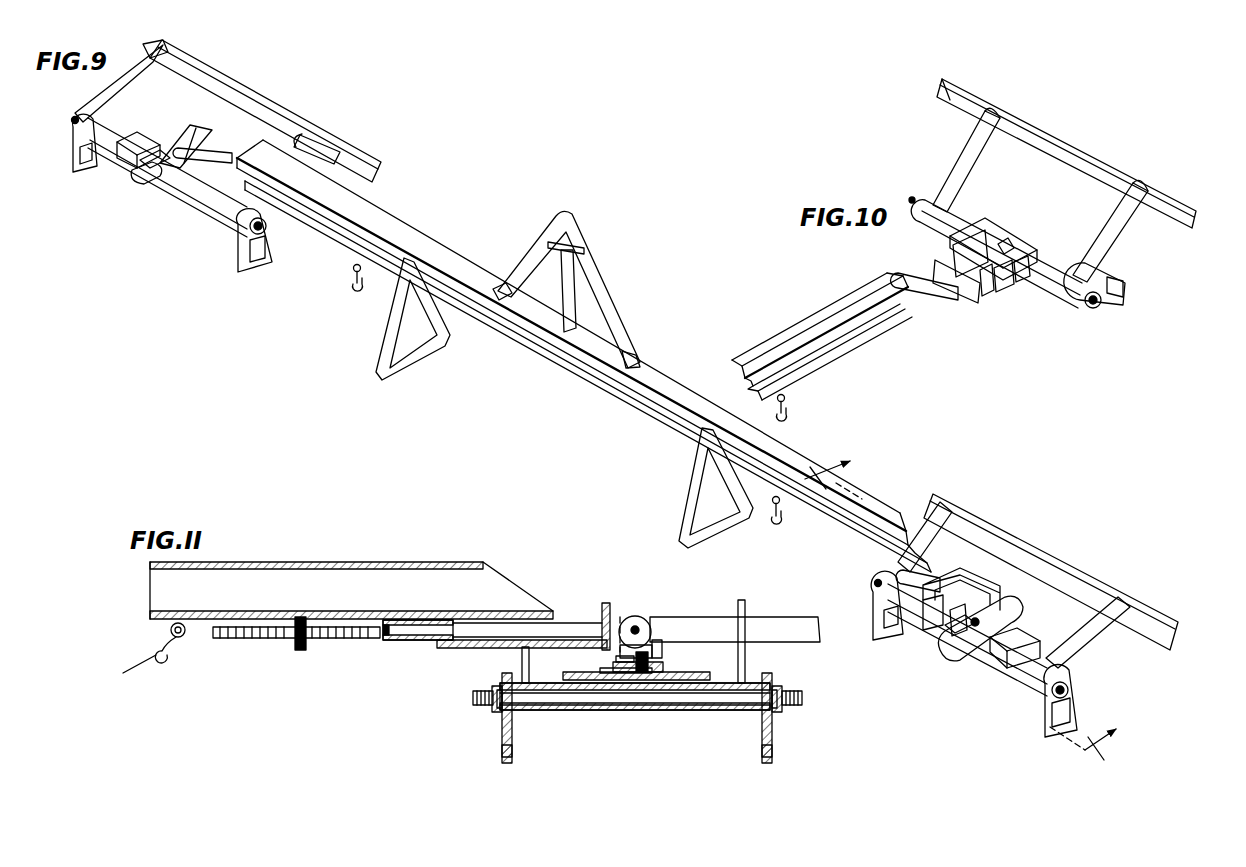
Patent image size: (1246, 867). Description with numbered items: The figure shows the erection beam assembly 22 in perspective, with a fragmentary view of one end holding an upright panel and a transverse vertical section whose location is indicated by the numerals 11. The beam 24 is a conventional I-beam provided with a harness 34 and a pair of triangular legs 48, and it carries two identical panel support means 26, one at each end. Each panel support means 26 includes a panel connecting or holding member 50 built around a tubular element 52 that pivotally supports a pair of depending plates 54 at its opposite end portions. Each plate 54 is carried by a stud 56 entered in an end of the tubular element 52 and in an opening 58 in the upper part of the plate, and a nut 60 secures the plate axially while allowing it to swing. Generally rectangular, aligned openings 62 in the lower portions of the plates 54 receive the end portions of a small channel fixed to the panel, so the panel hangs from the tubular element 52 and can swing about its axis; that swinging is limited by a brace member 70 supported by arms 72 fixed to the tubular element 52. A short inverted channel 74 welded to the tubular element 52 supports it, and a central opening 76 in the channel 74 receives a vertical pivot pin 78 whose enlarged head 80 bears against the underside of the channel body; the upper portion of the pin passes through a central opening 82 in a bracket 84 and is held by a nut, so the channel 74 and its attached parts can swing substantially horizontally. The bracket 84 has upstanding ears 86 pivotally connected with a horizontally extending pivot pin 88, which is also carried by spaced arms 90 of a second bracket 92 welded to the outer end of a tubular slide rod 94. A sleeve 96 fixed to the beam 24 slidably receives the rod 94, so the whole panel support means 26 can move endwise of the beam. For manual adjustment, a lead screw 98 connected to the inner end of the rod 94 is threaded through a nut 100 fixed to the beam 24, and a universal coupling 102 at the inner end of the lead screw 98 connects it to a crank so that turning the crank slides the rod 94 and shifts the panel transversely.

In FIG. 9, the section location indicator 11 is at (971, 602).
In FIG. 9, the erection beam assembly 22 is at (632, 302).
In FIG. 9, the beam 24 is at (440, 245).
In FIG. 10, the beam 24 is at (804, 318).
In FIG. 11, the beam 24 is at (293, 564).
In FIG. 9, the panel support means 26 is at (118, 215).
In FIG. 9, the harness 34 is at (565, 218).
In FIG. 9, the triangular legs 48 is at (417, 352).
In FIG. 9, the panel connecting or holding member 50 is at (255, 274).
In FIG. 9, the tubular element 52 is at (214, 205).
In FIG. 10, the tubular element 52 is at (1051, 260).
In FIG. 11, the tubular element 52 is at (585, 712).
In FIG. 9, the depending plates 54 is at (85, 170).
In FIG. 10, the depending plates 54 is at (931, 180).
In FIG. 11, the depending plates 54 is at (762, 752).
In FIG. 9, the stud 56 is at (74, 120).
In FIG. 10, the stud 56 is at (909, 200).
In FIG. 11, the stud 56 is at (516, 712).
In FIG. 11, the openings 58 is at (498, 689).
In FIG. 9, the nuts 60 is at (1070, 682).
In FIG. 10, the nuts 60 is at (1088, 310).
In FIG. 11, the nuts 60 is at (496, 713).
In FIG. 9, the openings 62 is at (876, 617).
In FIG. 10, the openings 62 is at (1126, 283).
In FIG. 11, the openings 62 is at (500, 753).
In FIG. 9, the brace member 70 is at (267, 107).
In FIG. 10, the brace member 70 is at (1076, 150).
In FIG. 11, the brace member 70 is at (760, 622).
In FIG. 9, the arms 72 is at (130, 88).
In FIG. 10, the arms 72 is at (966, 148).
In FIG. 11, the arms 72 is at (738, 605).
In FIG. 9, the inverted channel 74 is at (140, 136).
In FIG. 10, the inverted channel 74 is at (976, 232).
In FIG. 11, the inverted channel 74 is at (700, 673).
In FIG. 11, the central opening 76 is at (660, 668).
In FIG. 9, the vertical pivot pin 78 is at (960, 636).
In FIG. 10, the vertical pivot pin 78 is at (1004, 244).
In FIG. 11, the vertical pivot pin 78 is at (648, 644).
In FIG. 11, the enlarged head 80 is at (643, 682).
In FIG. 11, the central opening 82 is at (616, 660).
In FIG. 9, the bracket 84 is at (150, 180).
In FIG. 10, the bracket 84 is at (1024, 284).
In FIG. 11, the bracket 84 is at (618, 682).
In FIG. 9, the upstanding arms or ears 86 is at (134, 174).
In FIG. 10, the upstanding arms or ears 86 is at (1006, 294).
In FIG. 11, the upstanding arms or ears 86 is at (660, 642).
In FIG. 9, the horizontally extending pivot pin 88 is at (990, 592).
In FIG. 10, the horizontally extending pivot pin 88 is at (985, 296).
In FIG. 11, the horizontally extending pivot pin 88 is at (638, 626).
In FIG. 9, the spaced arms 90 is at (975, 575).
In FIG. 10, the spaced arms 90 is at (950, 256).
In FIG. 11, the spaced arms 90 is at (622, 615).
In FIG. 9, the second bracket 92 is at (217, 135).
In FIG. 10, the second bracket 92 is at (924, 276).
In FIG. 11, the second bracket 92 is at (603, 606).
In FIG. 9, the tubular slide rod 94 is at (215, 152).
In FIG. 10, the tubular slide rod 94 is at (940, 296).
In FIG. 11, the tubular slide rod 94 is at (564, 612).
In FIG. 11, the sleeve 96 is at (428, 648).
In FIG. 11, the lead screw 98 is at (368, 640).
In FIG. 11, the nut 100 is at (292, 655).
In FIG. 9, the universal coupling 102 is at (348, 295).
In FIG. 10, the universal coupling 102 is at (792, 412).
In FIG. 11, the universal coupling 102 is at (188, 657).